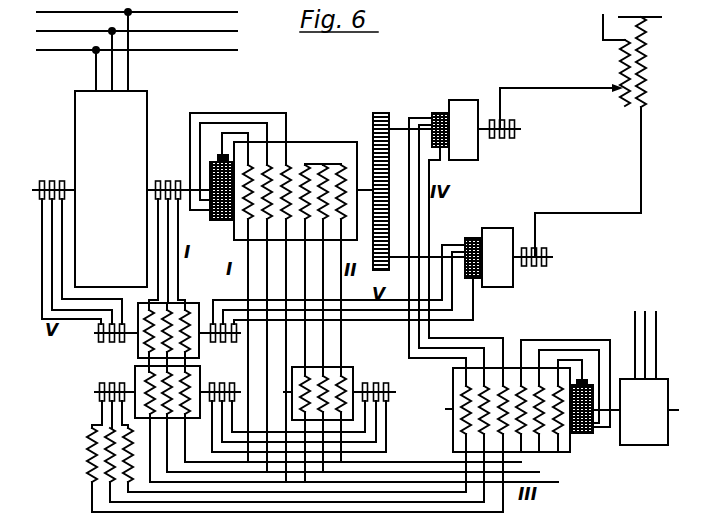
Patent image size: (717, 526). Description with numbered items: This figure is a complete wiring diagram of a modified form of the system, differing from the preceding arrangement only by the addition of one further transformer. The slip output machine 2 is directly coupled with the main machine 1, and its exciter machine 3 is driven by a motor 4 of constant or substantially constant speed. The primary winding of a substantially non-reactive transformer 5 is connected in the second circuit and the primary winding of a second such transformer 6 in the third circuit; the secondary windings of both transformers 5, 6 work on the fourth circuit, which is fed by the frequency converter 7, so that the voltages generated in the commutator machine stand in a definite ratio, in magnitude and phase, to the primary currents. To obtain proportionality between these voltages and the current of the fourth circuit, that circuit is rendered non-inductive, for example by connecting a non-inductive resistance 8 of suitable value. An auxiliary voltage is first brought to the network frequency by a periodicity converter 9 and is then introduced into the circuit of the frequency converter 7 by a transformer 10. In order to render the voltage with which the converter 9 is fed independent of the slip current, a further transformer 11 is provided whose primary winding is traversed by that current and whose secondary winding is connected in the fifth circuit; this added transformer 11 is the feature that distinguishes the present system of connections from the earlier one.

The main machine 1 is at (140, 117).
The slip output machine 2 is at (310, 148).
The exciter machine 3 is at (457, 378).
The motor 4 is at (640, 438).
The transformer 5 is at (201, 375).
The transformer 6 is at (352, 376).
The frequency converter 7 is at (467, 107).
The non-inductive resistance 8 is at (283, 456).
The periodicity converter 9 is at (507, 232).
The transformer 10 is at (620, 65).
The further transformer 11 is at (203, 303).